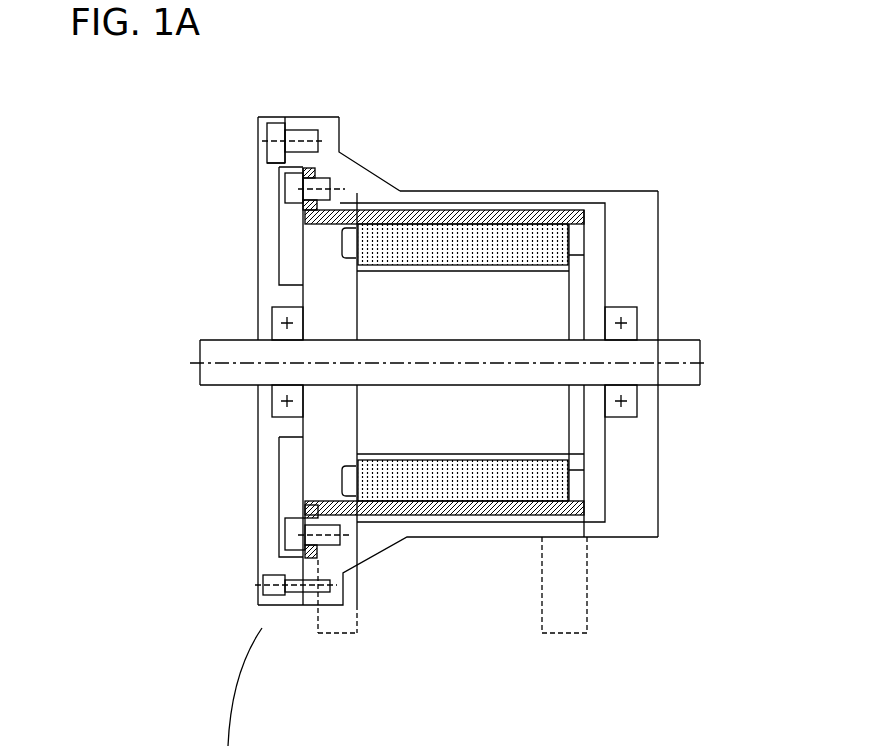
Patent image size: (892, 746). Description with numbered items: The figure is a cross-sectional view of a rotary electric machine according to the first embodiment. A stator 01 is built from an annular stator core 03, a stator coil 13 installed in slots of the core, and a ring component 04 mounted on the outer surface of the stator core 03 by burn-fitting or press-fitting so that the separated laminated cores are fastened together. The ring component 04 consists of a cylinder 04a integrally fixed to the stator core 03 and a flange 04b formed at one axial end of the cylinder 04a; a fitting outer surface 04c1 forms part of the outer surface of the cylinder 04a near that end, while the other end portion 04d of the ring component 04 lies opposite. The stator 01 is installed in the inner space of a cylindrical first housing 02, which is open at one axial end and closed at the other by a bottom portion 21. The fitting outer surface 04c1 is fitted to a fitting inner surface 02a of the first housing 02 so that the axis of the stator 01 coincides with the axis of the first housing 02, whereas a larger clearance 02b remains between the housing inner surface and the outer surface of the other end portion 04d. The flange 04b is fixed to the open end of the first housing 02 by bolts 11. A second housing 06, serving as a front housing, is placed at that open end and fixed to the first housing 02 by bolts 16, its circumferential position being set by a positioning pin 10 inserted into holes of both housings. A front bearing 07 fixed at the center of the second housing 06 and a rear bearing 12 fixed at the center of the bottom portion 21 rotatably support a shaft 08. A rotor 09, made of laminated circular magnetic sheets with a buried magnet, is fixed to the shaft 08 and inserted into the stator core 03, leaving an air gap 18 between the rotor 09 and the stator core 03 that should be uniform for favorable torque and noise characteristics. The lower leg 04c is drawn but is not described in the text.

The stator 01 is at (370, 397).
The first housing 02 is at (432, 330).
The fitting inner surface 02a is at (339, 152).
The clearance 02b is at (567, 207).
The stator core 03 is at (503, 240).
The ring component 04 is at (370, 424).
The cylinder 04a is at (453, 637).
The flange 04b is at (282, 191).
The leg portion 04c is at (357, 634).
The other end portion 04d is at (567, 610).
The fitting outer surface 04c1 is at (322, 503).
The second housing 06 is at (262, 258).
The front bearing 07 is at (273, 318).
The shaft 08 is at (597, 362).
The rotor 09 is at (520, 415).
The positioning pin 10 is at (264, 584).
The bolt 11 is at (281, 181).
The rear bearing 12 is at (627, 310).
The stator coil 13 is at (378, 160).
The bolt 16 is at (267, 133).
The air gap 18 is at (517, 460).
The bottom portion 21 is at (627, 257).